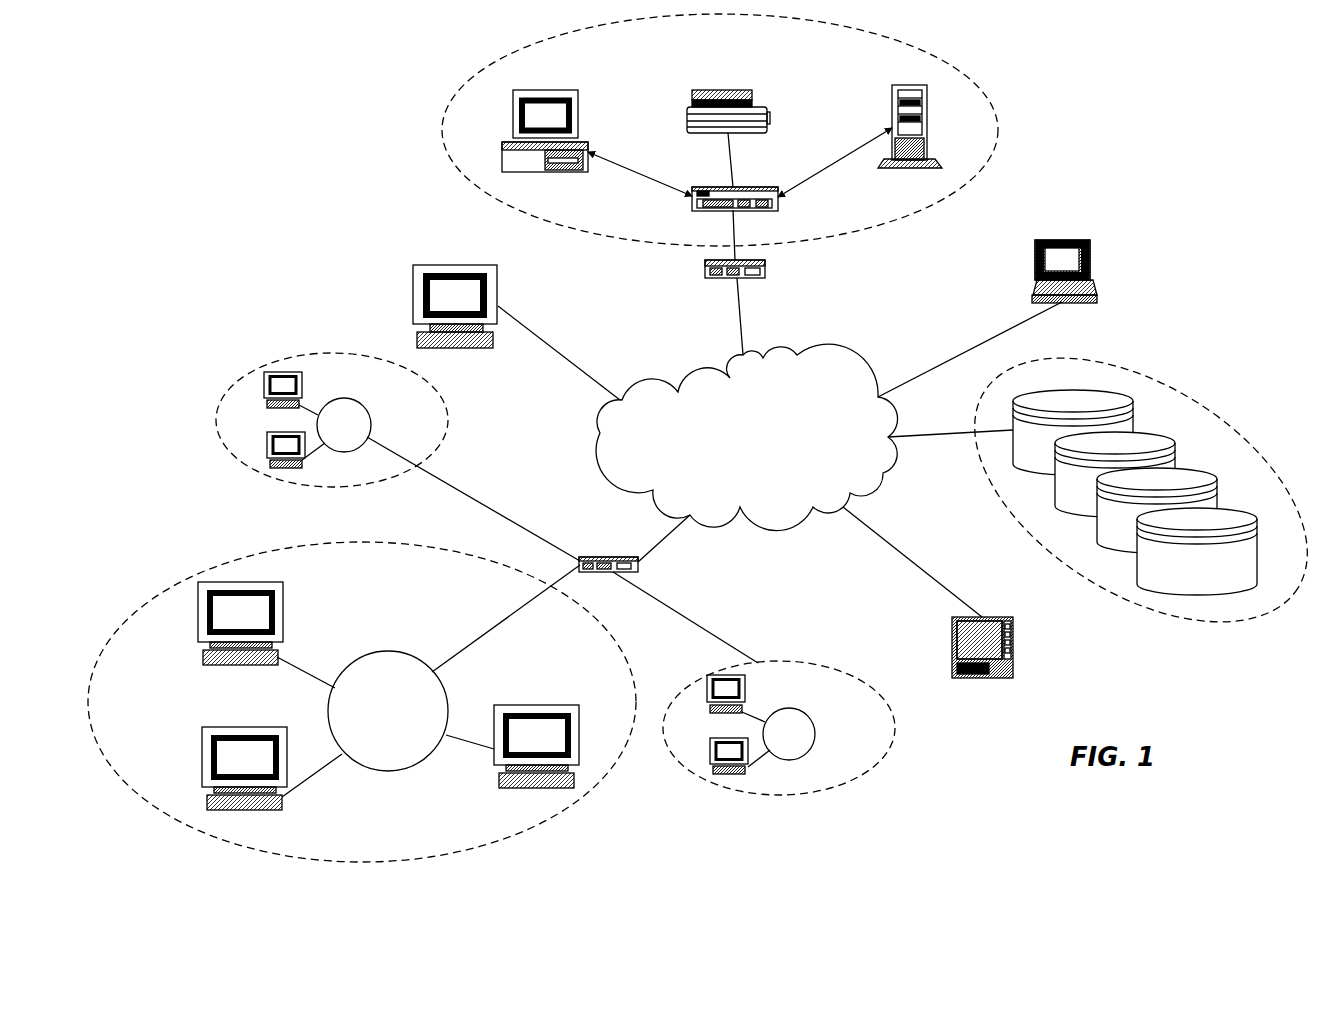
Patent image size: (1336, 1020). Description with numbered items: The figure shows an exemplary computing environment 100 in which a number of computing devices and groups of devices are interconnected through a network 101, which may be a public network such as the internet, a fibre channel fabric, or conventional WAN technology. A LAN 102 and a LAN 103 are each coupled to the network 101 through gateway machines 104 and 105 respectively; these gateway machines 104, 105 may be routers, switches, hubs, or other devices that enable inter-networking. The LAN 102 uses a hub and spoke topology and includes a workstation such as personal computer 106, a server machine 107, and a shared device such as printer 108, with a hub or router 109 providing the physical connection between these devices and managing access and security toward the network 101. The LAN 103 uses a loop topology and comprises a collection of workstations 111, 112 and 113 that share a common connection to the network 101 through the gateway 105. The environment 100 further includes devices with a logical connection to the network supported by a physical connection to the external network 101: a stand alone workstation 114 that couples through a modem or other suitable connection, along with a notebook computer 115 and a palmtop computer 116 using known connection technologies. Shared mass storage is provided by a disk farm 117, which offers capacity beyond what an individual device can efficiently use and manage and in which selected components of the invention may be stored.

The computing environment 100 is at (302, 113).
The network 101 is at (746, 437).
The LAN 102 is at (460, 98).
The LAN 103 is at (325, 356).
The gateway machine 104 is at (717, 283).
The gateway machine 105 is at (620, 556).
The personal computer 106 is at (580, 90).
The server machine 107 is at (892, 92).
The printer 108 is at (736, 90).
The hub or router 109 is at (752, 186).
The workstation 111 is at (287, 597).
The workstation 112 is at (227, 727).
The workstation 113 is at (539, 706).
The stand alone workstation 114 is at (430, 272).
The notebook computer 115 is at (1063, 240).
The palmtop computer 116 is at (957, 687).
The disk farm 117 is at (1132, 373).